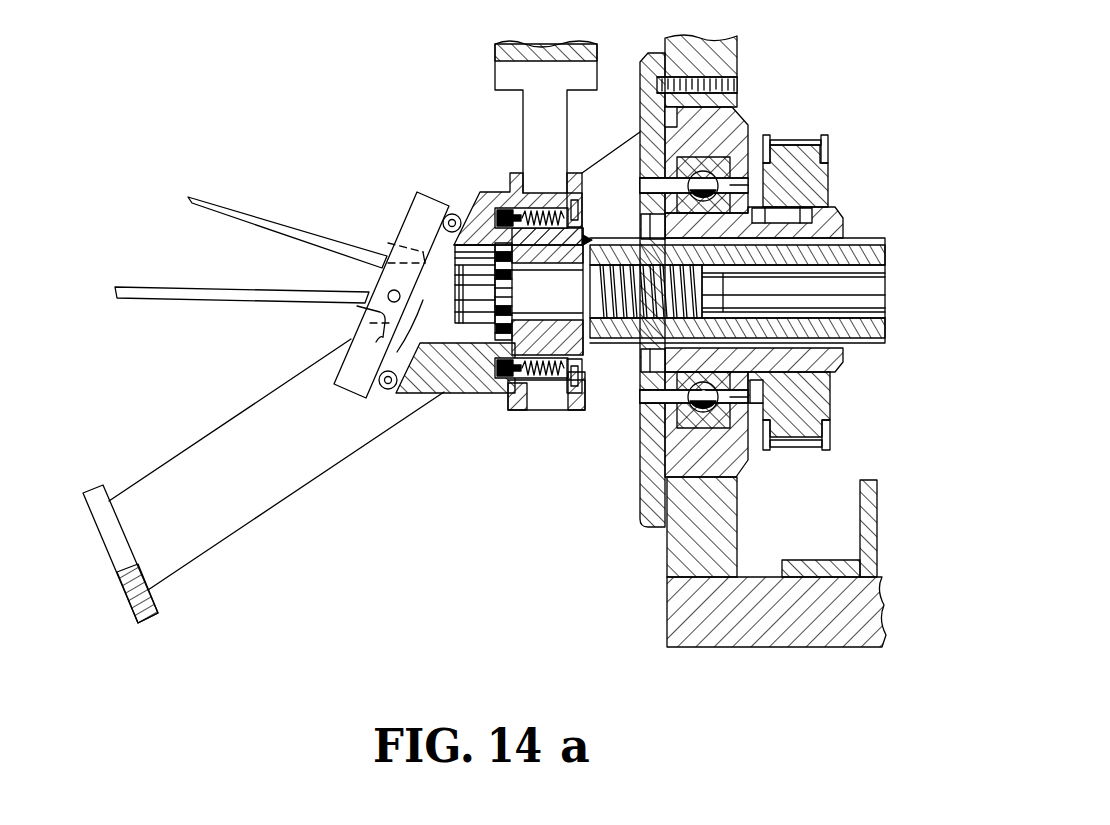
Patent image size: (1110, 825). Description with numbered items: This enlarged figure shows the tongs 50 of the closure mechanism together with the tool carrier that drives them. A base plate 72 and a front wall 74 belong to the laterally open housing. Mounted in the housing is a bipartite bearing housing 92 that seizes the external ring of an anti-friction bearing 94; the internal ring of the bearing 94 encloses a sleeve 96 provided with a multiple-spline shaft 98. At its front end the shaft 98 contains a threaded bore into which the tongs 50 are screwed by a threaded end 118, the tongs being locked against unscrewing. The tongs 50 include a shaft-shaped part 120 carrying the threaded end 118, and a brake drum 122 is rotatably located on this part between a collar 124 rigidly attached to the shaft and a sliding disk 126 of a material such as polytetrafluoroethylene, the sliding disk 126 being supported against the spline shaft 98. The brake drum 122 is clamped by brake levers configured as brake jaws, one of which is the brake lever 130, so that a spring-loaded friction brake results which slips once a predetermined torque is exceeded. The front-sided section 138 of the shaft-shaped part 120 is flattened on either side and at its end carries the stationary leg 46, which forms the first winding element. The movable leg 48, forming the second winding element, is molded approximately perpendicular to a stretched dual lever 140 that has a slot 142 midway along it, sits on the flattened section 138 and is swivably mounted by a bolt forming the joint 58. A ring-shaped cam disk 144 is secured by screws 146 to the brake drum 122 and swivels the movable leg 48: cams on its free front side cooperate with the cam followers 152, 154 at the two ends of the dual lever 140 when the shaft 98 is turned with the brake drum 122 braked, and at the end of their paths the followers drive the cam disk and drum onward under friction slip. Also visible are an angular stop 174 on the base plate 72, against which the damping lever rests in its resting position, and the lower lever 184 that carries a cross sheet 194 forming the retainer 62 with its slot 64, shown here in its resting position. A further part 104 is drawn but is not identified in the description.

The stationary leg 46 is at (205, 298).
The movable leg 48 is at (248, 220).
The tongs 50 is at (183, 230).
The joint 58 is at (386, 288).
The retainer 62 is at (78, 490).
The slot 64 is at (110, 545).
The base plate 72 is at (772, 641).
The front wall 74 is at (676, 548).
The bearing housing 92 is at (655, 488).
The anti-friction bearing 94 is at (662, 426).
The sleeve 96 is at (844, 366).
The multiple-spline shaft 98 is at (856, 244).
The bearing bracket 104 is at (822, 182).
The threaded end 118 is at (600, 339).
The shaft-shaped part 120 is at (524, 306).
The brake drum 122 is at (560, 400).
The collar 124 is at (502, 206).
The sliding disk 126 is at (590, 238).
The brake lever 130 is at (540, 122).
The front-sided section 138 is at (376, 342).
The dual lever 140 is at (416, 218).
The slot 142 is at (360, 317).
The cam disk 144 is at (472, 394).
The screws 146 is at (532, 413).
The cam follower 152 is at (446, 214).
The cam follower 154 is at (388, 390).
The angular stop 174 is at (860, 518).
The lower lever 184 is at (270, 498).
The cross sheet 194 is at (128, 601).